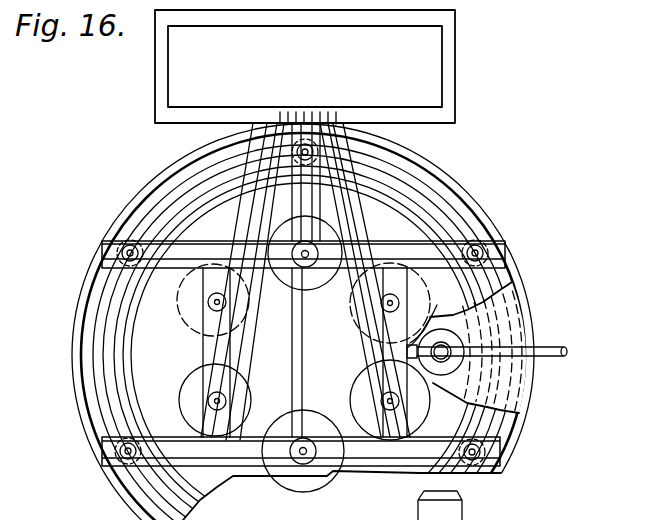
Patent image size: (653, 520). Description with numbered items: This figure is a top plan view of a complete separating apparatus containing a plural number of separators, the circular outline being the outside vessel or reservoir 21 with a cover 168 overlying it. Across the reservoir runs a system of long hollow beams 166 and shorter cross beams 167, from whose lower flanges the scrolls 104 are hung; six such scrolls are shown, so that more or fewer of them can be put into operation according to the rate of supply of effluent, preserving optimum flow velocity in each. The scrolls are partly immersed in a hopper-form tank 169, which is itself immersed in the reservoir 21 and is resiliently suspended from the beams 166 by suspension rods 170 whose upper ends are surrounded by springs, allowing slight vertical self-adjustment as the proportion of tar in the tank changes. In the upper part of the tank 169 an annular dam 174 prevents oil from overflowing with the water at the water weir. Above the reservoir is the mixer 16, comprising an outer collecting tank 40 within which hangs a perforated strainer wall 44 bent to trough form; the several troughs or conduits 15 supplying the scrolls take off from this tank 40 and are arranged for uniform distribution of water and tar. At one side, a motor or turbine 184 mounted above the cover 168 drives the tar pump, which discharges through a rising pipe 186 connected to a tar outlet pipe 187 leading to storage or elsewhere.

The mixer 16 is at (455, 48).
The perforated wall 44 is at (206, 107).
The collecting tank 40 is at (182, 123).
The troughs 15 is at (283, 230).
The reservoir 21 is at (78, 343).
The long hollow beams 166 is at (482, 248).
The cross beams 167 is at (207, 322).
The annular dam 174 is at (133, 337).
The tank 169 is at (125, 368).
The suspension rods 170 is at (117, 449).
The scrolls 104 is at (299, 416).
The rising pipe 186 is at (432, 314).
The motor or turbine 184 is at (438, 364).
The tar outlet pipe 187 is at (564, 351).
The cover 168 is at (523, 398).